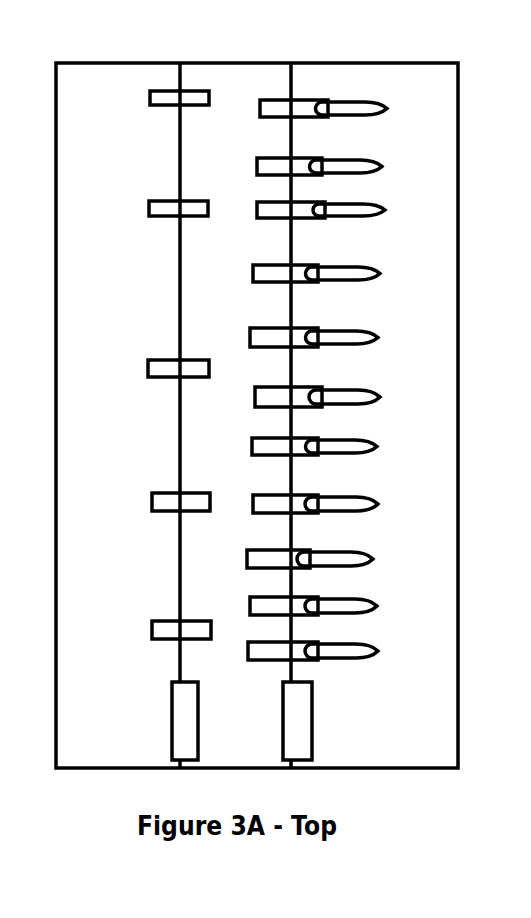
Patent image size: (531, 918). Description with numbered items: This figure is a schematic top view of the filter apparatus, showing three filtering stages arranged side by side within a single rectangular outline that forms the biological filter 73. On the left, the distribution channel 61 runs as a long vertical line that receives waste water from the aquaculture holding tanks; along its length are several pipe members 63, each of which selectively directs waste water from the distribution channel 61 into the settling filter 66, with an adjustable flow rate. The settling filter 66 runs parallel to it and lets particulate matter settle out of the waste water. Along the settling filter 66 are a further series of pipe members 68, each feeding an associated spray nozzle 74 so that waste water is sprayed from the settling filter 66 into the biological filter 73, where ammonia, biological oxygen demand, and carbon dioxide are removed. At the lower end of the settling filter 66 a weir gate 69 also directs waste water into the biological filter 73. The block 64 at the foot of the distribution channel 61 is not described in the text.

The distribution channel 61 is at (118, 77).
The pipe member 63 is at (152, 494).
The lower bearing block of first shaft 64 is at (198, 716).
The settling filter 66 is at (240, 77).
The pipe member 68 is at (303, 218).
The weir gate 69 is at (312, 715).
The biological filter 73 is at (382, 77).
The spray nozzle 74 is at (380, 202).